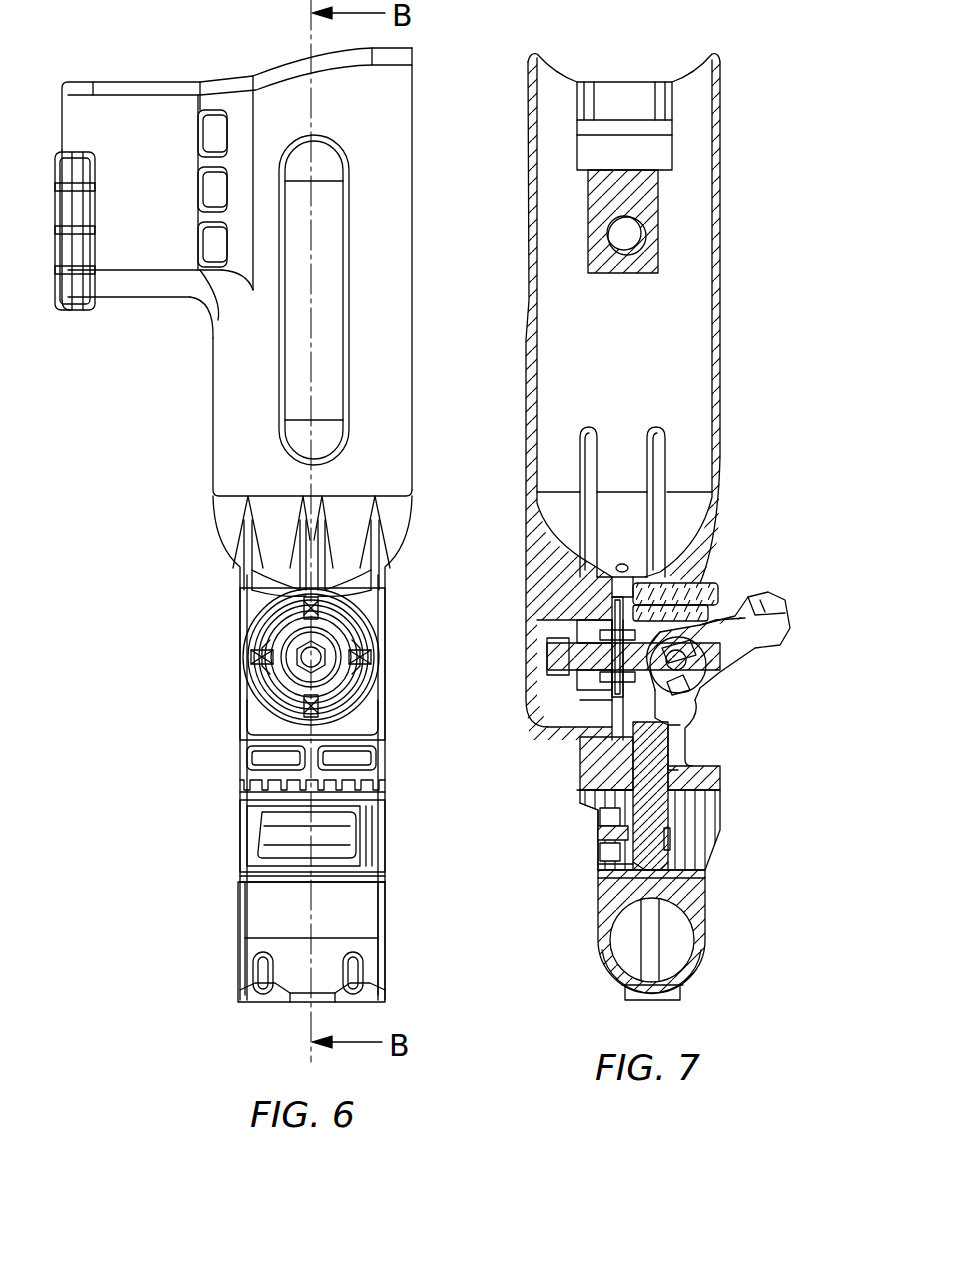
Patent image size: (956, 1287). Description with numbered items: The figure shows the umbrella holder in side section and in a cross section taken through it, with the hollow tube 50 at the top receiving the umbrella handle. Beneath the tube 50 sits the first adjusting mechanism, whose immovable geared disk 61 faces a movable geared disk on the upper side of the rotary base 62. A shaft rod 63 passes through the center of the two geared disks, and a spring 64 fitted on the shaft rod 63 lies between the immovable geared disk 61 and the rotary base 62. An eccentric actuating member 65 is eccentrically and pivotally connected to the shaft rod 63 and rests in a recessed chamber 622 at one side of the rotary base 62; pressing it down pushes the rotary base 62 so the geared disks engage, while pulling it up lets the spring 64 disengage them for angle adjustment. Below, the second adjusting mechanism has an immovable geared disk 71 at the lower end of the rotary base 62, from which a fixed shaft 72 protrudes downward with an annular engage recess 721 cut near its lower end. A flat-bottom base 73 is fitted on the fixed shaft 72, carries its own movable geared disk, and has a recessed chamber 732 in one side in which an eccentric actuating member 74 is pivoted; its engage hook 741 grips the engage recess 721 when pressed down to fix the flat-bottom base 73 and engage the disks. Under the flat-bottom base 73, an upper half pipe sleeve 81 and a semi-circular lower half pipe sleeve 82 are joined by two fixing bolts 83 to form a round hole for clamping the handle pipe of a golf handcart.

In FIG. 6, the hollow tube 50 is at (232, 379).
In FIG. 7, the hollow tube 50 is at (714, 327).
In FIG. 7, the immovable geared disk 61 is at (614, 705).
In FIG. 7, the rotary base 62 is at (706, 777).
In FIG. 7, the recessed chamber 622 is at (682, 730).
In FIG. 6, the shaft rod 63 is at (322, 653).
In FIG. 7, the shaft rod 63 is at (568, 658).
In FIG. 7, the spring 64 is at (612, 624).
In FIG. 7, the eccentric actuating member 65 is at (743, 633).
In FIG. 6, the immovable geared disk 71 is at (380, 781).
In FIG. 7, the fixed shaft 72 is at (653, 803).
In FIG. 7, the annular engage recess 721 is at (665, 837).
In FIG. 7, the flat-bottom base 73 is at (690, 862).
In FIG. 7, the recessed chamber 732 is at (603, 863).
In FIG. 7, the eccentric actuating member 74 is at (590, 833).
In FIG. 7, the engage hook 741 is at (598, 853).
In FIG. 7, the upper half pipe sleeve 81 is at (692, 907).
In FIG. 7, the lower half pipe sleeve 82 is at (687, 968).
In FIG. 7, the fixing bolts 83 is at (650, 942).